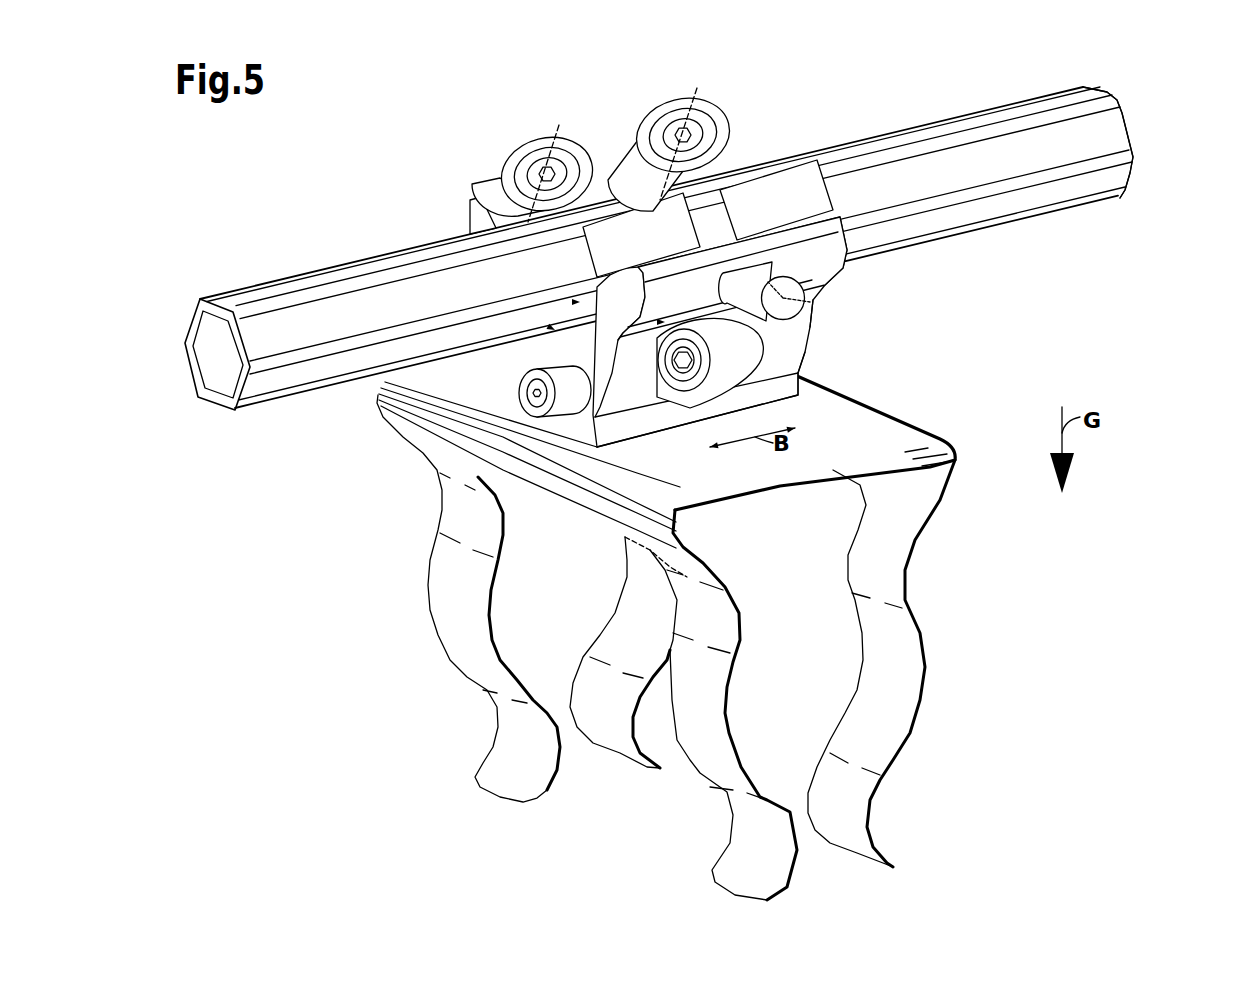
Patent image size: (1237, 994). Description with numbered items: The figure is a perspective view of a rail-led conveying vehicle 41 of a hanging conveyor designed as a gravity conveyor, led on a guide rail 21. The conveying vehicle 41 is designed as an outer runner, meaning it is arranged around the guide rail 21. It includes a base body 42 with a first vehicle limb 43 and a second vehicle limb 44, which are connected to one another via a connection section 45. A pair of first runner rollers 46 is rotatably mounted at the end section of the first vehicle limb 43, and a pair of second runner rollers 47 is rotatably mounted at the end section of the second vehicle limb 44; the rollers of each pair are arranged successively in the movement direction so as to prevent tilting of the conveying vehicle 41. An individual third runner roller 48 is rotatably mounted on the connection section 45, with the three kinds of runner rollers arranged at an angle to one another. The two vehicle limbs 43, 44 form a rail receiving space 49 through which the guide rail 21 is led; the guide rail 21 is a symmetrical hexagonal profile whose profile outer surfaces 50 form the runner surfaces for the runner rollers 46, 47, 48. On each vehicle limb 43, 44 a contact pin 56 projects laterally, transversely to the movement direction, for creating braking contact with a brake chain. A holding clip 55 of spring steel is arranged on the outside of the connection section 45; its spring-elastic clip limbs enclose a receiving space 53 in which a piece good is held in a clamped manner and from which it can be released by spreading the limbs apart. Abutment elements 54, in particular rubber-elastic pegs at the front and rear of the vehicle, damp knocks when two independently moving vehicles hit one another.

The guide rail 21 is at (995, 210).
The conveying vehicle 41 is at (667, 284).
The base body 42 is at (572, 302).
The first vehicle limb 43 is at (473, 203).
The second vehicle limb 44 is at (820, 270).
The connection section 45 is at (533, 407).
The first runner rollers 46 is at (508, 153).
The second runner rollers 47 is at (617, 227).
The third runner roller 48 is at (800, 370).
The rail receiving space 49 is at (548, 327).
The profile outer surfaces 50 is at (1087, 95).
The receiving space 53 is at (822, 713).
The abutment elements 54 is at (578, 430).
The holding clip 55 is at (920, 418).
The contact pin 56 is at (787, 300).